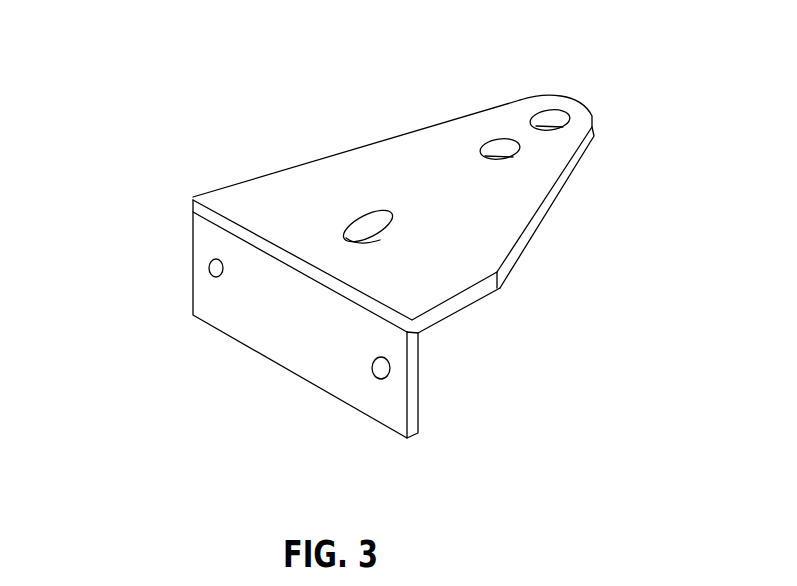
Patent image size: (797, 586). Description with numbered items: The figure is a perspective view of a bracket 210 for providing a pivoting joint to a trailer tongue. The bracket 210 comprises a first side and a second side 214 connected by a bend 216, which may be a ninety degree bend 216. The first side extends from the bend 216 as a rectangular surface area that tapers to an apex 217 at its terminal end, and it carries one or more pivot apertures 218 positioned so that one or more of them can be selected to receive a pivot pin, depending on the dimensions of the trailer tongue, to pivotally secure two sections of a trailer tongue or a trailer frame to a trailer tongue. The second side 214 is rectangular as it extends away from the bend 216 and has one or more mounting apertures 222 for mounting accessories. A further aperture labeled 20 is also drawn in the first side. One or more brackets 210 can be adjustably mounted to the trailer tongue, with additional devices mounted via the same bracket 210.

The bracket 210 is at (150, 104).
The second side 214 is at (297, 360).
The bend 216 is at (196, 199).
The apex 217 is at (612, 119).
The pivot apertures 218 is at (490, 148).
The slot aperture 20 is at (357, 222).
The mounting apertures 222 is at (210, 272).